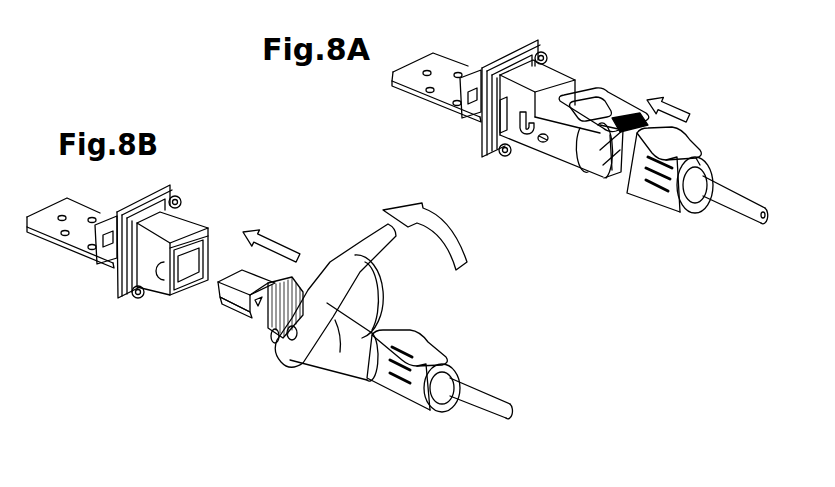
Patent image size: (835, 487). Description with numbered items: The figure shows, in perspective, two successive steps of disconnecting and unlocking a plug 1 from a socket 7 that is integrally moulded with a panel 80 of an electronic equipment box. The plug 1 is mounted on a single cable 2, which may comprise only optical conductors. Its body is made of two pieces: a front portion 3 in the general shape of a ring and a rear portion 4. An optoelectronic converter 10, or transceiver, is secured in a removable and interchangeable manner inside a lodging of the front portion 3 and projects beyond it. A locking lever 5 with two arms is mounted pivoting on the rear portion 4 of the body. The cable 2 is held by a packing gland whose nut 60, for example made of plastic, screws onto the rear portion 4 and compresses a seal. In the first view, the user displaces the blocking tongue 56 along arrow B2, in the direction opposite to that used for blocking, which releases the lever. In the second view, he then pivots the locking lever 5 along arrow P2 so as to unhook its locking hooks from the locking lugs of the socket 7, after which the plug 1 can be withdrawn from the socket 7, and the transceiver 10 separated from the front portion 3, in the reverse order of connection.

In FIG. 8A, the plug 1 is at (703, 130).
In FIG. 8B, the plug 1 is at (456, 312).
In FIG. 8A, the cable 2 is at (727, 198).
In FIG. 8B, the cable 2 is at (490, 407).
In FIG. 8B, the front portion 3 is at (237, 303).
In FIG. 8A, the rear portion 4 is at (567, 143).
In FIG. 8B, the rear portion 4 is at (332, 355).
In FIG. 8A, the locking lever 5 is at (625, 103).
In FIG. 8B, the locking lever 5 is at (350, 242).
In FIG. 8A, the socket 7 is at (550, 80).
In FIG. 8B, the socket 7 is at (148, 295).
In FIG. 8B, the optoelectronic converter 10 is at (239, 278).
In FIG. 8A, the blocking tongue 56 is at (612, 170).
In FIG. 8A, the nut 60 is at (672, 192).
In FIG. 8B, the nut 60 is at (433, 410).
In FIG. 8A, the panel 80 is at (507, 52).
In FIG. 8B, the panel 80 is at (113, 282).
In FIG. 8A, the arrow B2 is at (671, 95).
In FIG. 8B, the arrow P2 is at (431, 236).